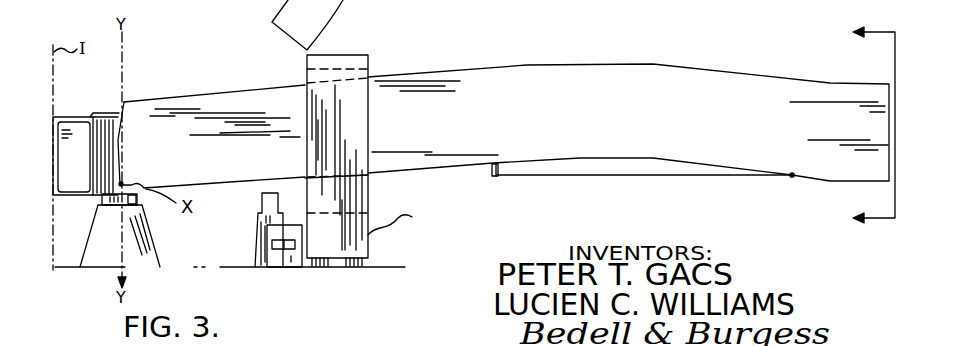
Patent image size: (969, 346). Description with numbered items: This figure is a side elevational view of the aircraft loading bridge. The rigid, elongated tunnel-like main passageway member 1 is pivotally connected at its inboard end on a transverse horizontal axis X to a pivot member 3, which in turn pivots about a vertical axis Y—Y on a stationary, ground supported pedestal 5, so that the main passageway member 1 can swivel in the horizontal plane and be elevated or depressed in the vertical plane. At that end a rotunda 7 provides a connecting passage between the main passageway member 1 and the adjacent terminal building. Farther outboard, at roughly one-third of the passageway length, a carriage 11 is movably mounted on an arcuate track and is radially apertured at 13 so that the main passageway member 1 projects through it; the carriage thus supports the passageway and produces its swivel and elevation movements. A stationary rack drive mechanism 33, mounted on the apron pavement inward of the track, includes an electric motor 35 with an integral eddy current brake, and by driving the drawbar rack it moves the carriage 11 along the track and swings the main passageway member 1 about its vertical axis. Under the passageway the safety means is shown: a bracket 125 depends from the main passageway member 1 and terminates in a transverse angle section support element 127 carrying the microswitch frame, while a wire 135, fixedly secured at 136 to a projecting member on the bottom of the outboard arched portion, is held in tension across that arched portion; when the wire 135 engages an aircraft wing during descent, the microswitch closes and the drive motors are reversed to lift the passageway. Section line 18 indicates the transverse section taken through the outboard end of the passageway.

The main passageway member 1 is at (494, 121).
The pivot member 3 is at (138, 196).
The pedestal 5 is at (110, 252).
The rotunda 7 is at (97, 113).
The carriage 11 is at (403, 221).
The radial aperture of carriage 13 is at (347, 64).
The section line 18- 18 is at (859, 128).
The rack drive mechanism 33 is at (271, 245).
The electric motor 35 is at (262, 204).
The bracket 125 is at (492, 171).
The support element 127 is at (498, 176).
The wire 135 is at (604, 177).
The wire attachment point 136 is at (792, 176).